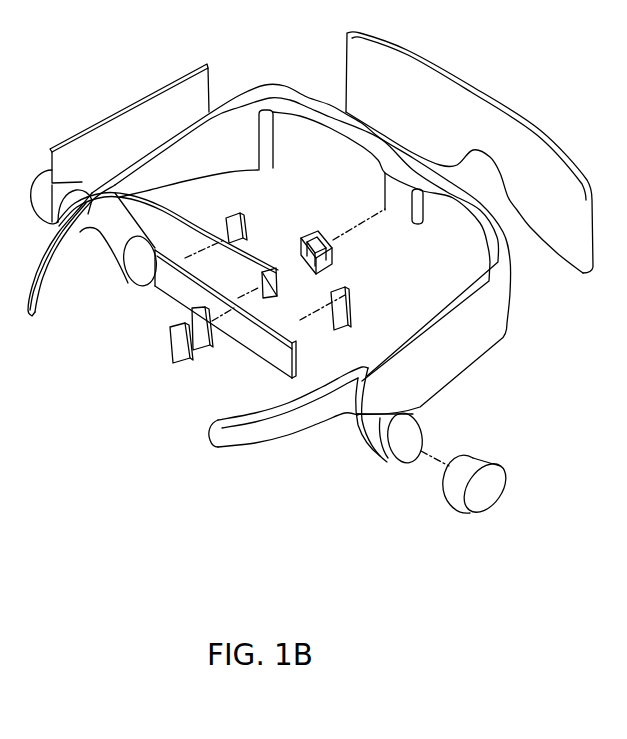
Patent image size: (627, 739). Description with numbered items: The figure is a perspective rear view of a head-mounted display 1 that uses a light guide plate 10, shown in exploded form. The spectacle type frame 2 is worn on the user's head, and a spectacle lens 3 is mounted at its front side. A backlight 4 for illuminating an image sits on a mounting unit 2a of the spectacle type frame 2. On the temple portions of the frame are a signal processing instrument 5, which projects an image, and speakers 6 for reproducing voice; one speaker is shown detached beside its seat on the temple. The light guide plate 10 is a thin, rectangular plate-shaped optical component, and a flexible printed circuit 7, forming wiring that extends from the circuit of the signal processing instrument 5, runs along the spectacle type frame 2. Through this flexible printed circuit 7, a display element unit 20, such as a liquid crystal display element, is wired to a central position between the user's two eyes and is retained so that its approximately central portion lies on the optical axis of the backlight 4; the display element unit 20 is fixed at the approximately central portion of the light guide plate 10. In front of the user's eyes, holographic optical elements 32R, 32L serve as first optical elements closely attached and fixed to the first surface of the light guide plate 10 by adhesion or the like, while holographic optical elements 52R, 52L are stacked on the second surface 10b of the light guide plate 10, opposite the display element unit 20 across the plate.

The head-mounted display 1 is at (140, 476).
The spectacle type frame 2 is at (475, 340).
The mounting unit 2a is at (411, 214).
The spectacle lens 3 is at (559, 178).
The backlight 4 is at (318, 236).
The signal processing instrument 5 is at (126, 130).
The speaker 6 is at (453, 488).
The flexible printed circuit (FPC) 7 is at (270, 262).
The light guide plate 10 is at (261, 328).
The second surface 10b is at (268, 358).
The display element unit 20 is at (285, 273).
The holographic optical element (first optical element) 32L is at (257, 203).
The holographic optical element (first optical element) 32R is at (344, 303).
The holographic optical element 52L is at (170, 346).
The holographic optical element 52R is at (204, 350).